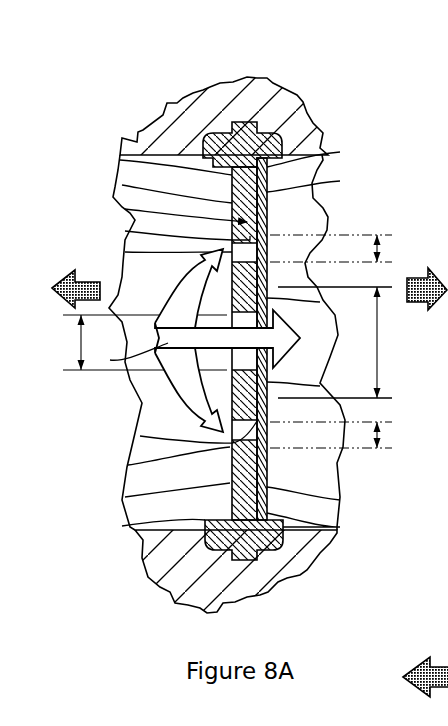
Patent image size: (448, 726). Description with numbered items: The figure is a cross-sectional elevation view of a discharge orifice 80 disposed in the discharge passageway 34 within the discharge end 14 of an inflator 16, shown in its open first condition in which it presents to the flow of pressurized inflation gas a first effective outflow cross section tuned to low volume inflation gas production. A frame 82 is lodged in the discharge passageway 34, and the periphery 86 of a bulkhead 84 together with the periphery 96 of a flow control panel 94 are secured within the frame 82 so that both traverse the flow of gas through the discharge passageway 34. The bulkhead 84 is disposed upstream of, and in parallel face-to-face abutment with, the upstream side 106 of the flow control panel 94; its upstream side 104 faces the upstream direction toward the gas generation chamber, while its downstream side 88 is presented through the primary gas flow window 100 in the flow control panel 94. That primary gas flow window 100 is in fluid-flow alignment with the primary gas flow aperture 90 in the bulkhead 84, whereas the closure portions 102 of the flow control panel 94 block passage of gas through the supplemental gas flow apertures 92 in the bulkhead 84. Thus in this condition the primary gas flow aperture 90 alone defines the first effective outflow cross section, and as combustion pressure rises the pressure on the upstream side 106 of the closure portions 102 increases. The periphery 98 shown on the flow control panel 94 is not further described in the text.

The inflator 16 is at (202, 76).
The discharge orifice 80 is at (204, 120).
The discharge end 14 is at (212, 336).
The frame 82 is at (246, 140).
The periphery of bulkhead 86 is at (120, 160).
The upstream side of bulkhead 104 is at (122, 185).
The bulkhead 84 is at (125, 209).
The supplemental gas flow apertures 92 is at (125, 231).
The upstream side of flow control panel 106 is at (125, 252).
The periphery of flow control panel 96 is at (340, 152).
The inner sleeve layer 98 is at (340, 181).
The flow control panel 94 is at (270, 218).
The closure portions 102 is at (346, 341).
The downstream side of bulkhead 88 is at (320, 302).
The primary gas flow window 100 is at (396, 342).
The primary gas flow aperture 90 is at (141, 342).
The discharge passageway 34 is at (177, 416).